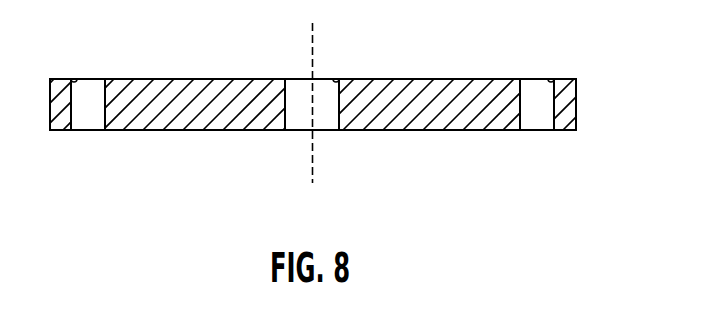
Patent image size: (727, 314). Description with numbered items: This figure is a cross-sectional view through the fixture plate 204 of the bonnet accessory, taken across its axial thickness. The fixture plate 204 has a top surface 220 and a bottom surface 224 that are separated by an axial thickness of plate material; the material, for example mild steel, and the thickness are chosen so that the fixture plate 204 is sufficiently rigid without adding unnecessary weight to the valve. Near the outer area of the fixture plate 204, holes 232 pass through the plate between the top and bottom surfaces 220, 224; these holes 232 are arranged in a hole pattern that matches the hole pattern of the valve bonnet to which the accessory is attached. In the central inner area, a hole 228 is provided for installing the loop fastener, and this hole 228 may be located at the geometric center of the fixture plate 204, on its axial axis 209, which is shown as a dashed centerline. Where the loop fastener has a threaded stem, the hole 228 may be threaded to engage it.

The fixture plate 204 is at (577, 99).
The top surface 220 is at (215, 78).
The bottom surface 224 is at (220, 131).
The hole 228 is at (337, 78).
The holes 232 is at (72, 78).
The axial axis 209 is at (313, 155).